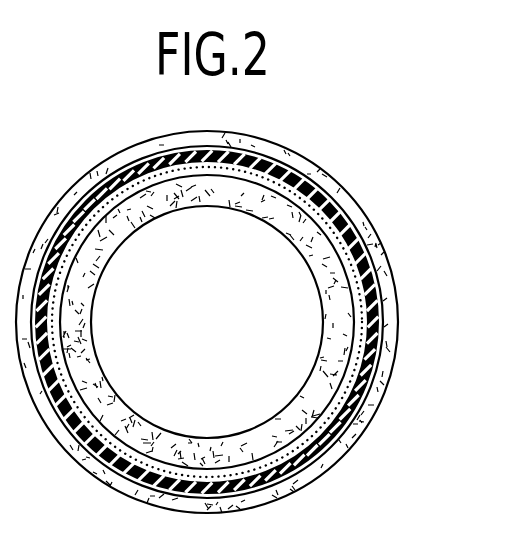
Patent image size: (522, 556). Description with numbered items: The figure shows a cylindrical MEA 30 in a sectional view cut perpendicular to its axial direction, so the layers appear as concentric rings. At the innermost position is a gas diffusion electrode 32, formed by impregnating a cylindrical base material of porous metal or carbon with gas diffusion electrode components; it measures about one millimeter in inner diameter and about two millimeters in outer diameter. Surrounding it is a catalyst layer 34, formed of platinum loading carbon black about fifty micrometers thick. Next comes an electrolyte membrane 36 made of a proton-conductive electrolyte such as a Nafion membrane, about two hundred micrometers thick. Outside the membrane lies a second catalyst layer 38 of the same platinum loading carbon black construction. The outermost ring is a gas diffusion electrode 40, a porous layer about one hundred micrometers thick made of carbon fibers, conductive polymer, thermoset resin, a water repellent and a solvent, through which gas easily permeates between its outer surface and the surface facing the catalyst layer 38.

The cylindrical MEA 30 is at (380, 184).
The gas diffusion electrode 32 is at (330, 301).
The catalyst layer 34 is at (356, 352).
The electrolyte membrane 36 is at (283, 466).
The catalyst layer 38 is at (378, 369).
The gas diffusion electrode 40 is at (388, 301).